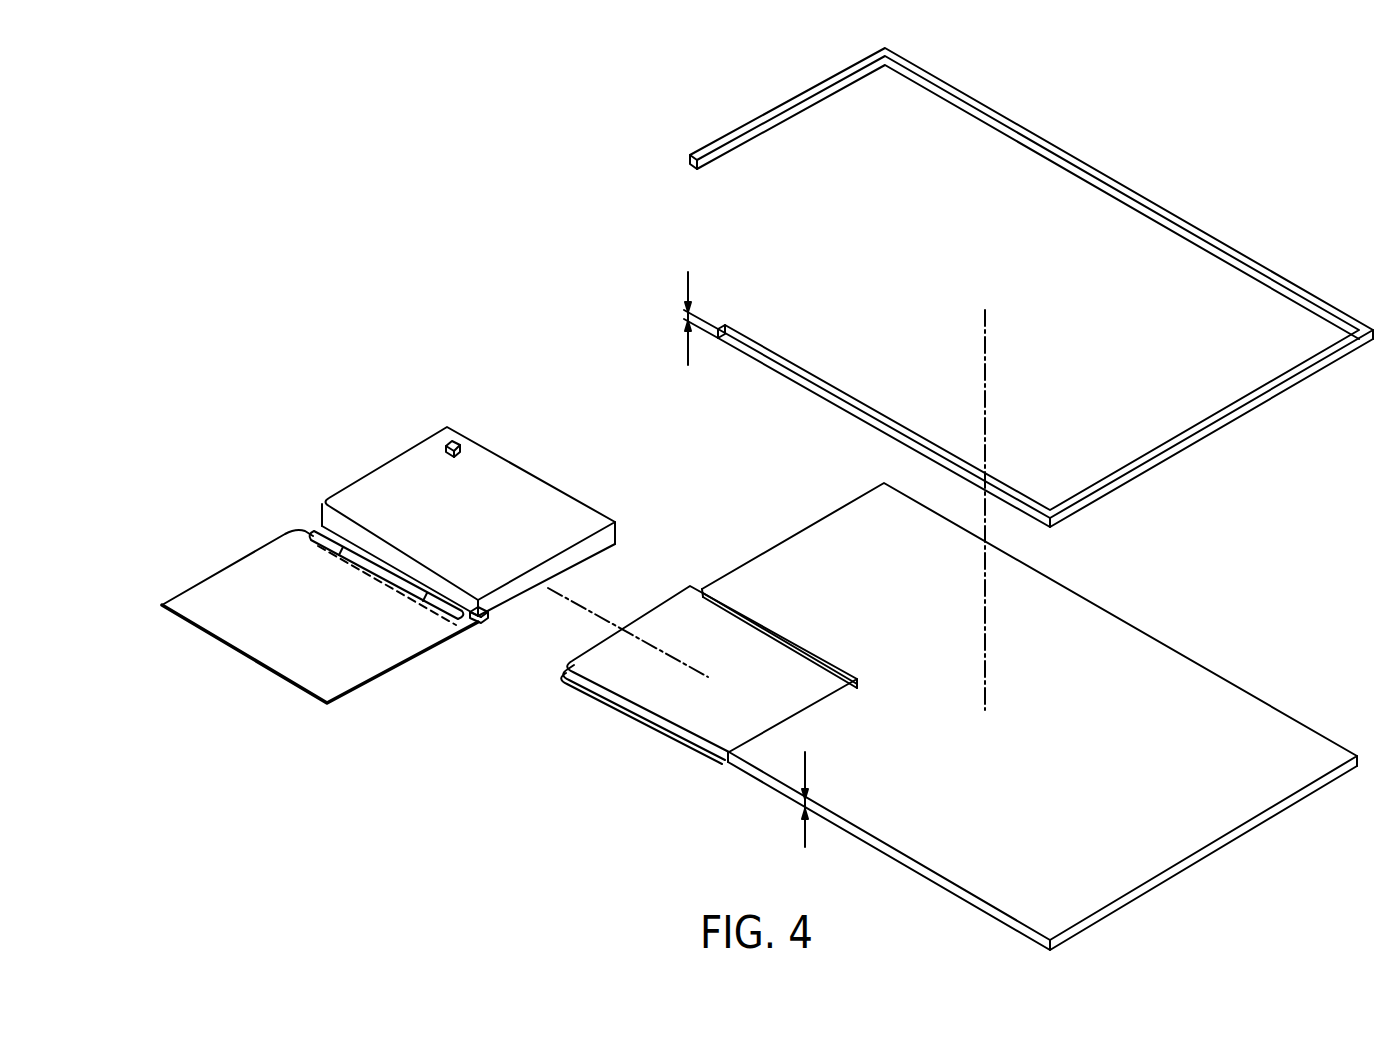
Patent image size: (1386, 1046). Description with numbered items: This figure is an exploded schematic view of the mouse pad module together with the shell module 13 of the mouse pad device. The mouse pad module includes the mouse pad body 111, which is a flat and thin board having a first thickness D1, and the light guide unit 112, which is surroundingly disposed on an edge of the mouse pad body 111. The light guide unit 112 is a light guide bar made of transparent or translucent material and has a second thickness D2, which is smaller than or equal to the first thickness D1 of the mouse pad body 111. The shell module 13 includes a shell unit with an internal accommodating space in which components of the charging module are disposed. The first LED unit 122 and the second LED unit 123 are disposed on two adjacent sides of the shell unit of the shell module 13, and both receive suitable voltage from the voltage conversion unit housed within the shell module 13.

The light guide unit 112 is at (1123, 188).
The mouse pad body 111 is at (1170, 675).
The shell module 13 is at (363, 487).
The first LED unit 122 is at (457, 438).
The second LED unit 123 is at (481, 621).
The first thickness D1 is at (784, 801).
The second thickness D2 is at (681, 318).